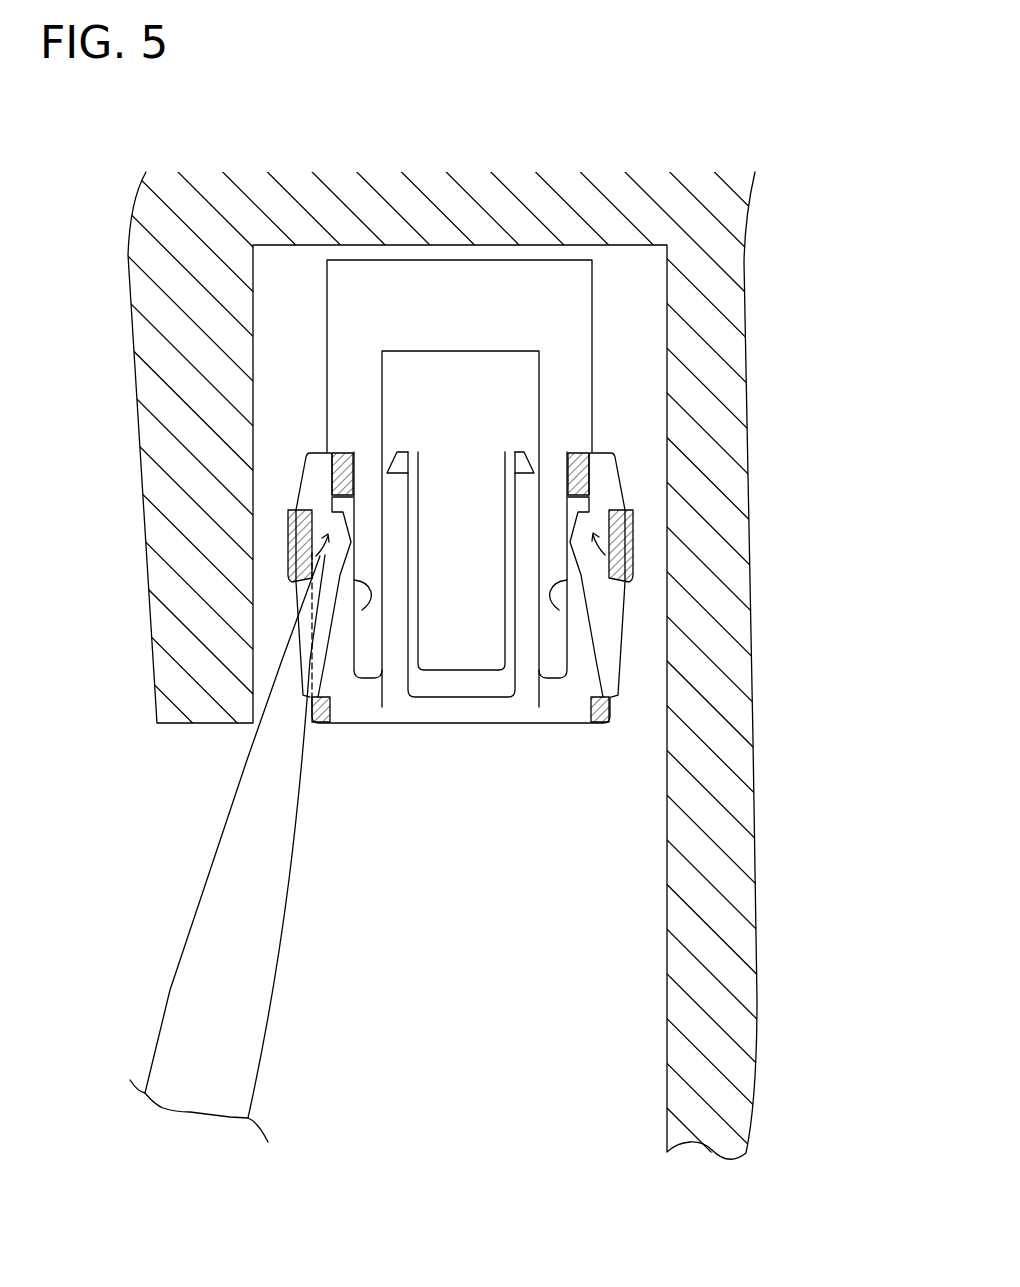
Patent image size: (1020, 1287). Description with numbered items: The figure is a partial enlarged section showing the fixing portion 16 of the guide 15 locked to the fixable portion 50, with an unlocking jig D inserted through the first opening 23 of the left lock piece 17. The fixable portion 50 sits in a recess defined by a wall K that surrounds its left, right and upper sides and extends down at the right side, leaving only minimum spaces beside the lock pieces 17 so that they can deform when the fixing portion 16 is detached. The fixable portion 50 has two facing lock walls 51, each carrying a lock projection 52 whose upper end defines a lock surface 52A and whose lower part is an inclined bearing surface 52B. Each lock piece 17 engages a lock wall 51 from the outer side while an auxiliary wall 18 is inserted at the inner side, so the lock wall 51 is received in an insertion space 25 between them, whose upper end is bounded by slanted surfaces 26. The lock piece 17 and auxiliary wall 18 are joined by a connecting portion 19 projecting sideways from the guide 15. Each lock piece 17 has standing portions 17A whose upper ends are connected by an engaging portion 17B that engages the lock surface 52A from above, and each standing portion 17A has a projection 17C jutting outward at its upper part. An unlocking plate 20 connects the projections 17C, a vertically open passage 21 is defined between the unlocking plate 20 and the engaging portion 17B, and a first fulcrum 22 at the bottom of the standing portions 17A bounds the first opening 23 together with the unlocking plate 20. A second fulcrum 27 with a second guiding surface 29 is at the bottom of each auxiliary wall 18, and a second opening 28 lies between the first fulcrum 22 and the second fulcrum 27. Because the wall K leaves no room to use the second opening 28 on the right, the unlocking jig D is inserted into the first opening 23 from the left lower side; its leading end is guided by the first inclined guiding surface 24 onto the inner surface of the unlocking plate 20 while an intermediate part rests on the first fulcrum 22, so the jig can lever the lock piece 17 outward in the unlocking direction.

The wall K is at (400, 232).
The fixable portion 50 is at (478, 270).
The lock wall 51 is at (416, 452).
The slanted surface 26 is at (392, 475).
The lock projection 52 is at (460, 549).
The lock surface 52A is at (503, 478).
The inclined bearing surface 52B is at (515, 565).
The fixing portion 16 is at (475, 717).
The lock piece 17 is at (333, 630).
The standing portion 17A is at (350, 628).
The engaging portion 17B is at (332, 480).
The projection 17C is at (300, 502).
The unlocking plate 20 is at (288, 540).
The passage 21 is at (292, 578).
The first inclined guiding surface 24 is at (340, 613).
The first opening 23 is at (312, 703).
The insertion space 25 is at (353, 620).
The first fulcrum 22 is at (330, 638).
The second opening 28 is at (331, 724).
The connecting portion 19 is at (345, 723).
The second guiding surface 29 is at (402, 708).
The second fulcrum 27 is at (398, 712).
The auxiliary wall 18 is at (400, 608).
The guide 15 is at (460, 687).
The unlocking jig D is at (205, 998).